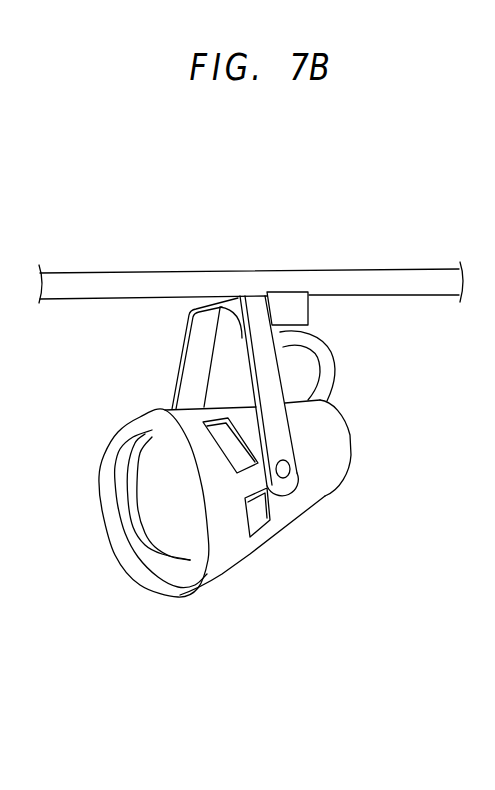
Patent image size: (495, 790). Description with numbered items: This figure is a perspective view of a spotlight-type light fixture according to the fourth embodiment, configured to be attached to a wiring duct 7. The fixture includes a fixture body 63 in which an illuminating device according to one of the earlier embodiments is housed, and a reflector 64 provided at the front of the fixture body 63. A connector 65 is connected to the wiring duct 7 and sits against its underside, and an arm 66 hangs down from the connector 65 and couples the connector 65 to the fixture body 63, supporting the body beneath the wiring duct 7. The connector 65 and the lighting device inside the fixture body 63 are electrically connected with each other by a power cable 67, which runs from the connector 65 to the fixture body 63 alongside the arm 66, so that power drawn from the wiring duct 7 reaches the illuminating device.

The wiring duct 7 is at (392, 280).
The fixture body 63 is at (333, 497).
The reflector 64 is at (120, 565).
The connector 65 is at (287, 298).
The arm 66 is at (190, 370).
The power cable 67 is at (325, 360).